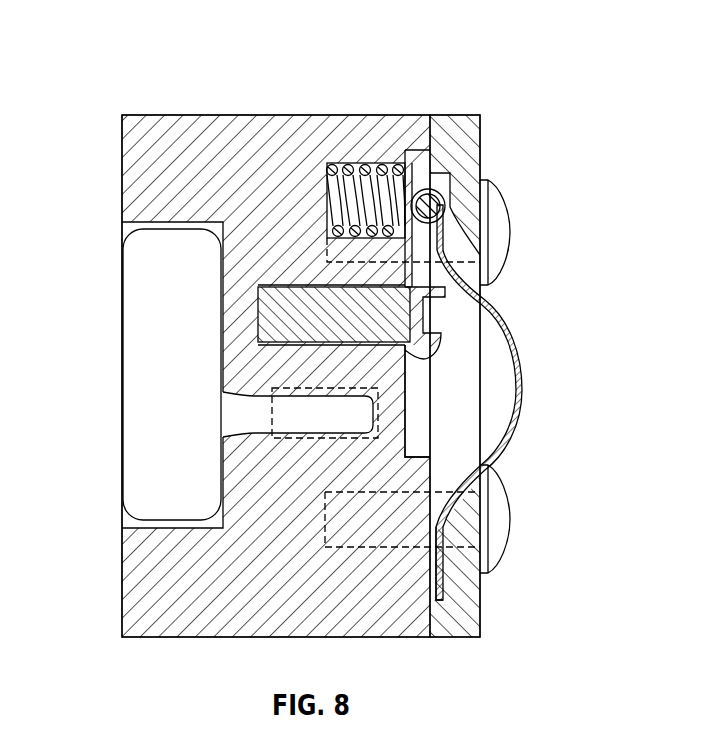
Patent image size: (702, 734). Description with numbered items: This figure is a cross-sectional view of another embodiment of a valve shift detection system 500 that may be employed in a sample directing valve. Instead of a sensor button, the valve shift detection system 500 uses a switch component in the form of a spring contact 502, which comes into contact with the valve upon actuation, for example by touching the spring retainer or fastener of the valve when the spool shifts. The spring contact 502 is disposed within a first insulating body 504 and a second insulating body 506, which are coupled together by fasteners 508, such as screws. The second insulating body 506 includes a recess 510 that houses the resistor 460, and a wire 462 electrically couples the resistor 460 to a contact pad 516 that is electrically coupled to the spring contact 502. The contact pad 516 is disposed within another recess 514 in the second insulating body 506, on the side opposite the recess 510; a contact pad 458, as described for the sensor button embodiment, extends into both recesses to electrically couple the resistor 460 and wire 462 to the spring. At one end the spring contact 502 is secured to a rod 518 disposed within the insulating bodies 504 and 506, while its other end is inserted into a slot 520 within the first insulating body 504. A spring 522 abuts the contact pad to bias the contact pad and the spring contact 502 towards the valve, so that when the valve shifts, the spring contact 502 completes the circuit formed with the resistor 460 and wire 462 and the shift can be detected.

The valve shift detection system 500 is at (134, 57).
The second insulating body 506 is at (183, 114).
The first insulating body 504 is at (465, 145).
The fasteners 508 is at (497, 233).
The rod 518 is at (447, 202).
The spring contact 502 is at (520, 385).
The recess 514 is at (420, 421).
The slot 520 is at (435, 582).
The spring 522 is at (360, 163).
The contact pad 516 is at (330, 310).
The recess 510 is at (123, 521).
The resistor 460 is at (137, 398).
The wire 462 is at (243, 397).
The contact pad 458 is at (298, 388).